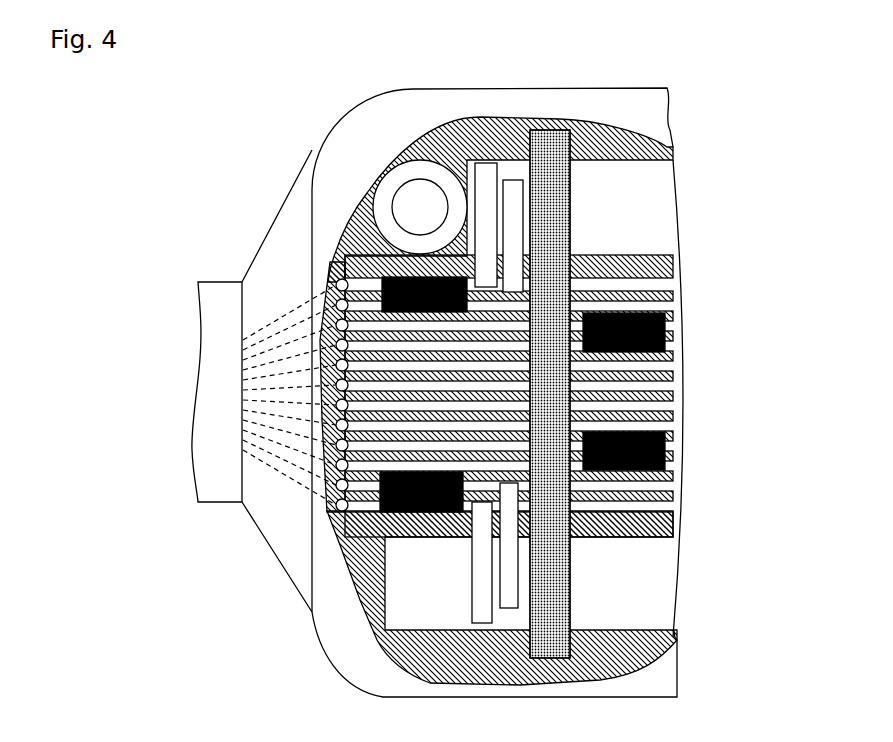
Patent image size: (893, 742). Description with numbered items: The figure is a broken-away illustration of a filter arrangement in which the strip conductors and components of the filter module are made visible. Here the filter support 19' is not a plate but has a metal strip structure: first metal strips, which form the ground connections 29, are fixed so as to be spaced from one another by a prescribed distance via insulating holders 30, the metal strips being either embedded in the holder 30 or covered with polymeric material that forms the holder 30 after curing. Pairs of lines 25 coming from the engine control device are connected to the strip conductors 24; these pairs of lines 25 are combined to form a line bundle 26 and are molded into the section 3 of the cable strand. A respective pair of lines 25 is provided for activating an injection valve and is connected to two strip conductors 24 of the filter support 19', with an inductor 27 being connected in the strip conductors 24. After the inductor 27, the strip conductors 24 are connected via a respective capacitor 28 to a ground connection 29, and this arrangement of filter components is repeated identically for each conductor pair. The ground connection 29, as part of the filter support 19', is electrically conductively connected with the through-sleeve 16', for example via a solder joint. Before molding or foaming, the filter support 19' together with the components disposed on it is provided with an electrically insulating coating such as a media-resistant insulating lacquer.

The section 3 is at (215, 468).
The through-sleeve 16' is at (420, 128).
The filter support 19' is at (494, 359).
The strip conductors 24 is at (338, 280).
The pairs of lines 25 is at (333, 296).
The line bundle 26 is at (268, 380).
The inductor 27 is at (373, 207).
The capacitor 28 is at (512, 180).
The ground connections 29 is at (648, 583).
The insulating holders 30 is at (573, 195).